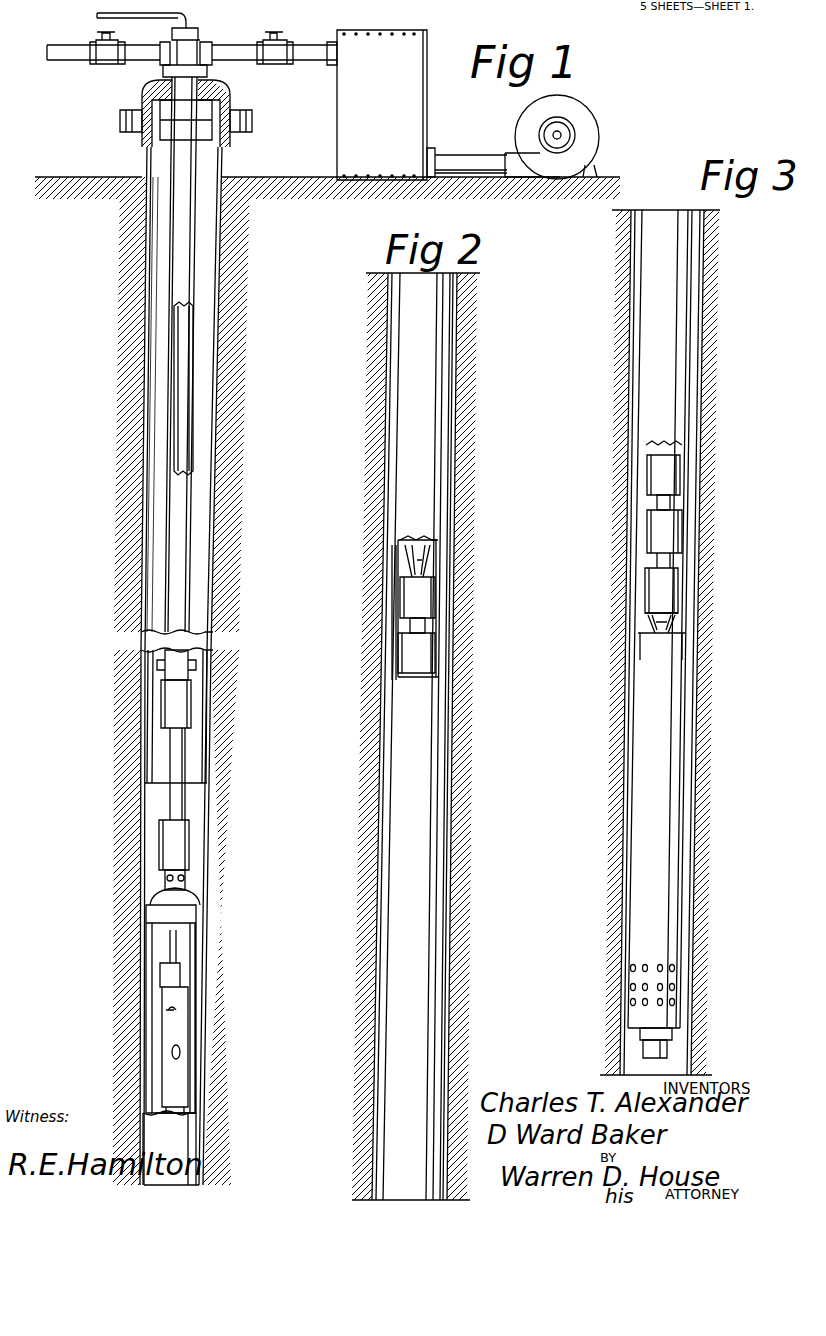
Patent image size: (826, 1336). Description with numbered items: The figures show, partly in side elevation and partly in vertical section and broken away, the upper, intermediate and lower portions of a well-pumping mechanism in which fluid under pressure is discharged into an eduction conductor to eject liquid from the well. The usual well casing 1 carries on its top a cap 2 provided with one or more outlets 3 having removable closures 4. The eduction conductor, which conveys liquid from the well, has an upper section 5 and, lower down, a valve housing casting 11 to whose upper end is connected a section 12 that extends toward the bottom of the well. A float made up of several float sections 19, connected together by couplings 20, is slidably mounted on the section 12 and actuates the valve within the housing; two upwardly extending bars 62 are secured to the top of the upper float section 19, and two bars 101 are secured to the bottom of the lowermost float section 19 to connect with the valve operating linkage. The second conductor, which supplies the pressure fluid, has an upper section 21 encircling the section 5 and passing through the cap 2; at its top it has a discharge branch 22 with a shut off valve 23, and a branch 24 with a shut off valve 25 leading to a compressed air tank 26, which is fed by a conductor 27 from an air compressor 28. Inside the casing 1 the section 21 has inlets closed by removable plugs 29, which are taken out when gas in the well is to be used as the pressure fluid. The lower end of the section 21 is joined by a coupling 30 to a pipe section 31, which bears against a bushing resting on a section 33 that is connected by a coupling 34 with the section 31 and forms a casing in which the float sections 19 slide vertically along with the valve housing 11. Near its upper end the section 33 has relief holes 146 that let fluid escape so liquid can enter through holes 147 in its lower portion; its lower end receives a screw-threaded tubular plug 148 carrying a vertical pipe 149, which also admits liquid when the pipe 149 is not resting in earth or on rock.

In FIG. 1, the well casing 1 is at (222, 261).
In FIG. 1, the cap 2 is at (143, 97).
In FIG. 1, the outlet 3 is at (222, 123).
In FIG. 1, the removable closure 4 is at (128, 128).
In FIG. 1, the upper section of eduction conductor 5 is at (97, 15).
In FIG. 1, the valve housing casting 11 is at (178, 1026).
In FIG. 1, the pipe section 12 is at (196, 1118).
In FIG. 2, the pipe section 12 is at (405, 555).
In FIG. 3, the pipe section 12 is at (680, 625).
In FIG. 2, the float section 19 is at (436, 600).
In FIG. 3, the float section 19 is at (650, 478).
In FIG. 2, the coupling 20 is at (426, 627).
In FIG. 3, the coupling 20 is at (655, 503).
In FIG. 1, the upper section of second conductor 21 is at (180, 224).
In FIG. 1, the discharge branch 22 is at (142, 52).
In FIG. 1, the shut off valve 23 is at (108, 57).
In FIG. 1, the branch 24 is at (229, 50).
In FIG. 1, the shut off valve 25 is at (283, 47).
In FIG. 1, the compressed air tank 26 is at (343, 93).
In FIG. 1, the conductor 27 is at (460, 162).
In FIG. 1, the air compressor 28 is at (528, 122).
In FIG. 1, the removable plug 29 is at (160, 665).
In FIG. 1, the coupling 30 is at (180, 706).
In FIG. 1, the pipe section 31 is at (178, 754).
In FIG. 1, the pipe section or casing 33 is at (197, 940).
In FIG. 2, the pipe section or casing 33 is at (432, 422).
In FIG. 3, the pipe section or casing 33 is at (650, 375).
In FIG. 1, the coupling 34 is at (178, 850).
In FIG. 2, the upwardly extending bar 62 is at (428, 558).
In FIG. 3, the bar 101 is at (650, 627).
In FIG. 1, the relief hole 146 is at (190, 879).
In FIG. 3, the hole 147 is at (676, 1002).
In FIG. 3, the screw-threaded tubular plug 148 is at (673, 1035).
In FIG. 3, the vertical pipe 149 is at (668, 1049).